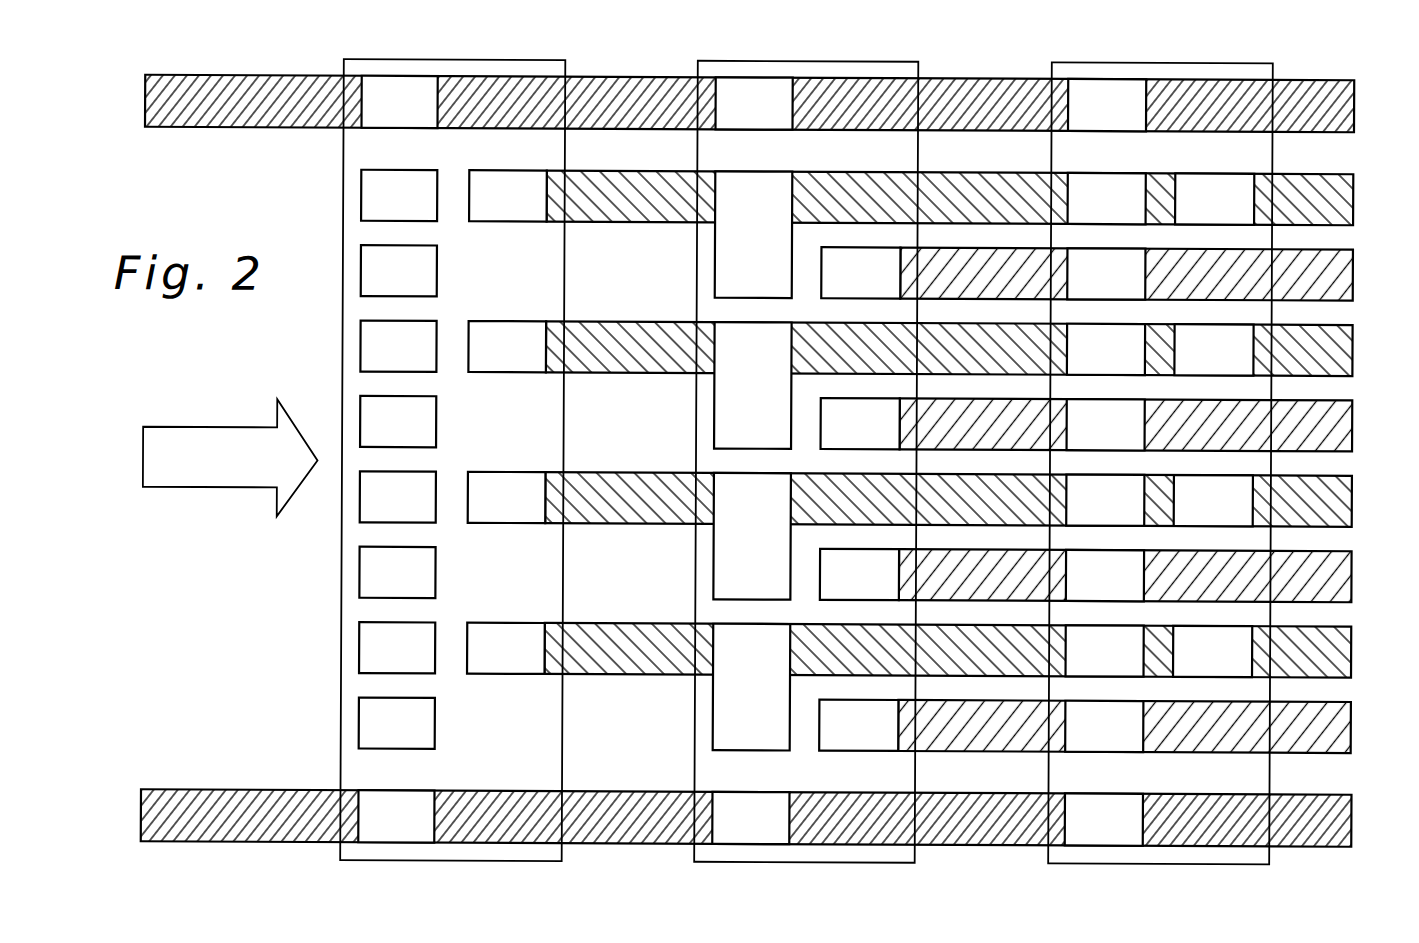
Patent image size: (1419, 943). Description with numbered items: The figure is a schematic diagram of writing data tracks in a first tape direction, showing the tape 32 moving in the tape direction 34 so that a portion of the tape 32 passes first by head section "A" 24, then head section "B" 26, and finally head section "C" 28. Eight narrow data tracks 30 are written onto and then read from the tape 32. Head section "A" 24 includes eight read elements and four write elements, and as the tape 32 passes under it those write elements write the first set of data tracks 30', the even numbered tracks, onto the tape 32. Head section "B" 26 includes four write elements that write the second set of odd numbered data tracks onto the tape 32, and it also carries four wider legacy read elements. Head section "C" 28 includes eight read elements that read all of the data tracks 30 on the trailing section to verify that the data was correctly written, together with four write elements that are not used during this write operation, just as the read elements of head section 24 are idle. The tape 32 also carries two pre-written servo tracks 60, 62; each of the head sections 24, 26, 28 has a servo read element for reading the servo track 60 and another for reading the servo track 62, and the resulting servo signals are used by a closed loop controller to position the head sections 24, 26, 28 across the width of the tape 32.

The head section "A" 24 is at (523, 61).
The head section "B" 26 is at (873, 61).
The head section "C" 28 is at (1246, 60).
The data tracks 30 is at (889, 461).
The first set of data tracks 30' is at (949, 424).
The tape 32 is at (231, 644).
The tape direction 34 is at (203, 430).
The servo track 60 is at (219, 131).
The servo track 62 is at (215, 791).